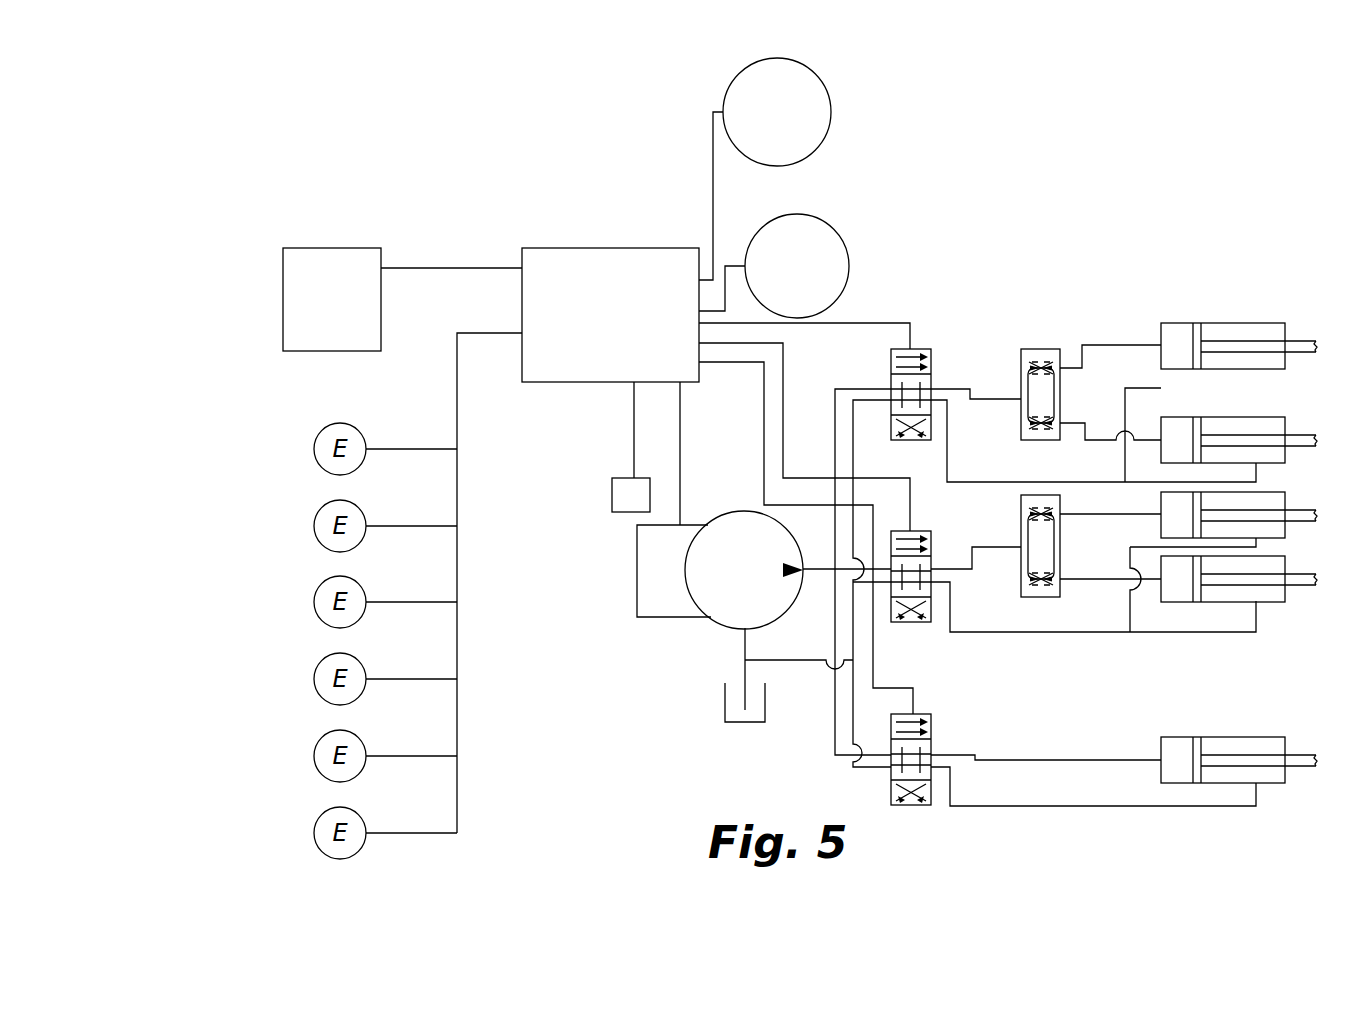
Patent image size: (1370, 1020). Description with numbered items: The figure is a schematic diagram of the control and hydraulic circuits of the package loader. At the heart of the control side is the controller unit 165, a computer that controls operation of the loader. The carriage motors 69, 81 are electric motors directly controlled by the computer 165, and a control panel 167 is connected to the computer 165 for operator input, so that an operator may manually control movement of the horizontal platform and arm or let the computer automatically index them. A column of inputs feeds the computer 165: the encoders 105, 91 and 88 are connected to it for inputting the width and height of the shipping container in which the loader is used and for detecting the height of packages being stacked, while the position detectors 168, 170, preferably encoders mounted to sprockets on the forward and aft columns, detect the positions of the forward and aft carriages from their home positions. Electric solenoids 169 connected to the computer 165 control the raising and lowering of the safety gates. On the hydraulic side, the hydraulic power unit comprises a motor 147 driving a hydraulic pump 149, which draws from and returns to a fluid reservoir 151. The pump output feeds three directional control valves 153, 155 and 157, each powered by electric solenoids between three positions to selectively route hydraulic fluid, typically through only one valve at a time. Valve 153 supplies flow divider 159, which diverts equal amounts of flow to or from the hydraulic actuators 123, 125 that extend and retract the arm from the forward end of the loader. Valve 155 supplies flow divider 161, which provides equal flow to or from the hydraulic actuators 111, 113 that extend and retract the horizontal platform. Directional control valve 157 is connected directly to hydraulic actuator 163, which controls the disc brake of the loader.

The carriage motor 69 is at (820, 96).
The carriage motor 81 is at (828, 262).
The control panel 167 is at (361, 257).
The controller unit 165 is at (605, 258).
The electric solenoids 169 is at (612, 500).
The motor 147 is at (637, 600).
The hydraulic pump 149 is at (752, 540).
The fluid reservoir 151 is at (727, 706).
The directional control valve 153 is at (918, 352).
The directional control valve 155 is at (918, 532).
The directional control valve 157 is at (918, 714).
The flow divider 159 is at (1040, 352).
The flow divider 161 is at (1058, 506).
The hydraulic actuator 123 is at (1283, 322).
The hydraulic actuator 125 is at (1283, 416).
The hydraulic actuator 111 is at (1283, 492).
The hydraulic actuator 113 is at (1283, 556).
The hydraulic actuator 163 is at (1283, 736).
The encoder 105 is at (313, 448).
The encoder 91 is at (313, 525).
The encoder 88 is at (313, 601).
The position detector 168 is at (313, 755).
The position detector 170 is at (313, 832).